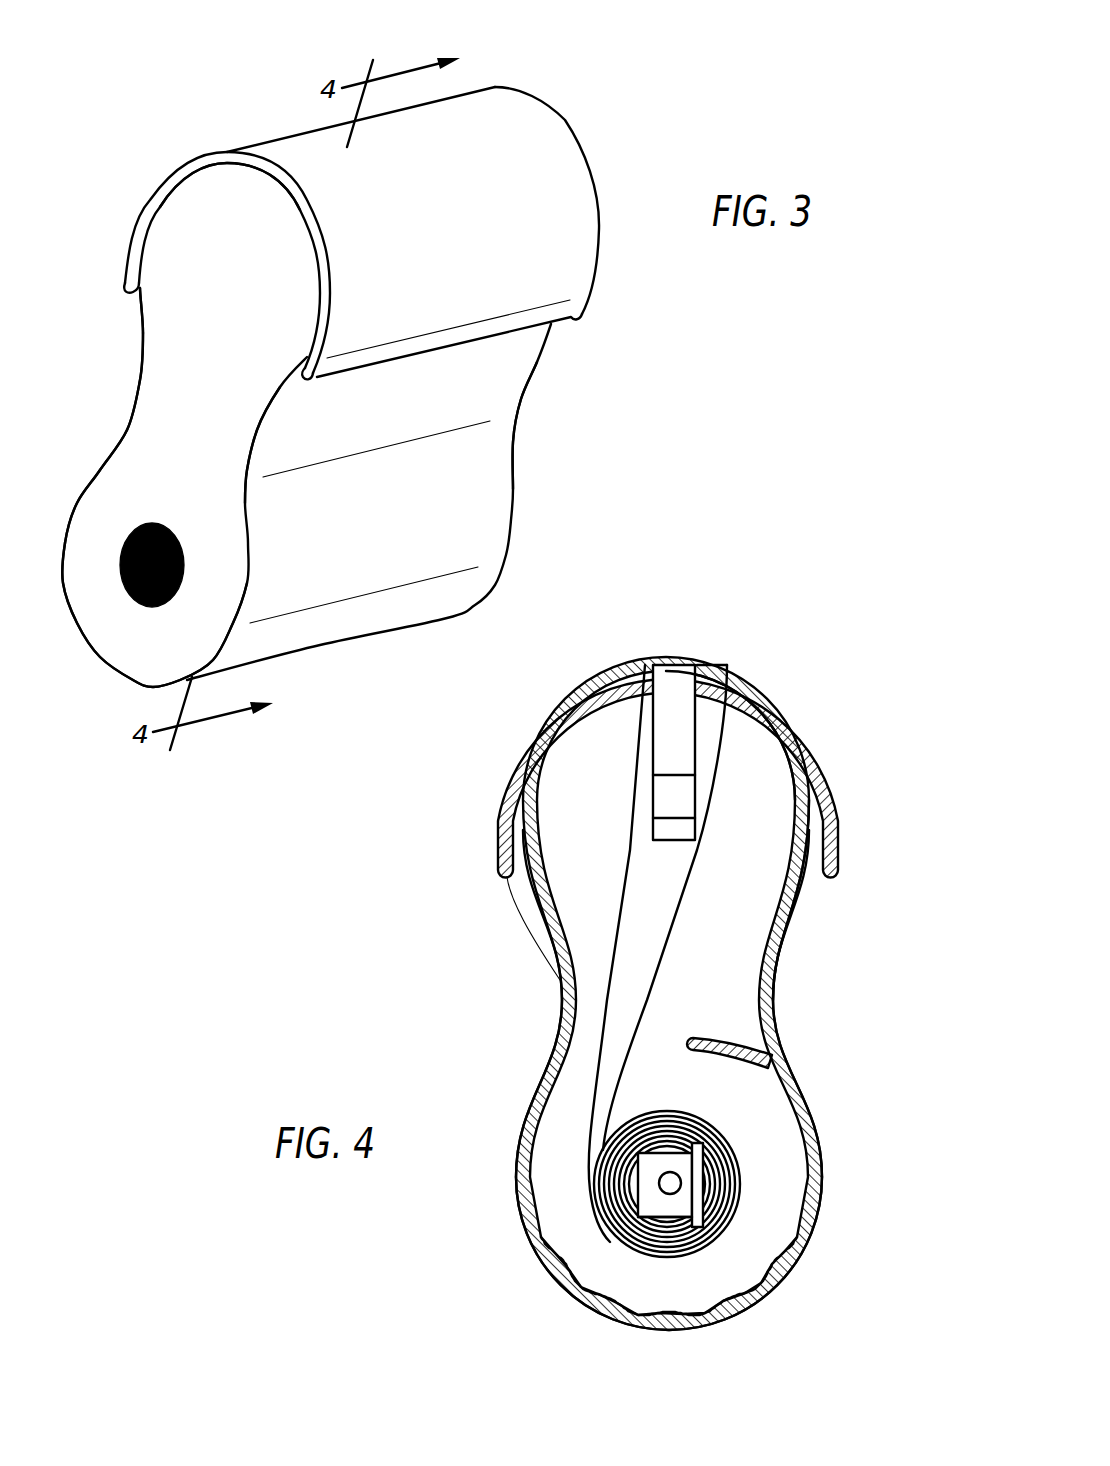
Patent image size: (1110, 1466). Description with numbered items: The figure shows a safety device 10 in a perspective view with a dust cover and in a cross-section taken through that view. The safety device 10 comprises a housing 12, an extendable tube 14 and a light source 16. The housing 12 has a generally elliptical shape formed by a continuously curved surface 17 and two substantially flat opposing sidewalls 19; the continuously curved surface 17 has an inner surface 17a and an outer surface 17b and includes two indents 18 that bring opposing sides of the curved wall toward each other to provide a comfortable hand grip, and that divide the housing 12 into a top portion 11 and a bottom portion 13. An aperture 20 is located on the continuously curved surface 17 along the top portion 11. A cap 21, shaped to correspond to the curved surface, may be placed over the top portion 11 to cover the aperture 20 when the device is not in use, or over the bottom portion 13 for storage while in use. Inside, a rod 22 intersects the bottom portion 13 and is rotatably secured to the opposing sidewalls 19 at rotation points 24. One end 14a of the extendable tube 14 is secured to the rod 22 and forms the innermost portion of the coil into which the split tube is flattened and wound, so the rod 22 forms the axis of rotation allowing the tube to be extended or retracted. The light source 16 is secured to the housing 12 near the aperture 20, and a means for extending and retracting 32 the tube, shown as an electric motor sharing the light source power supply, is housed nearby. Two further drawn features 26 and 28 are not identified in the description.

In FIG. 3, the safety device 10 is at (124, 81).
In FIG. 4, the safety device 10 is at (855, 624).
In FIG. 3, the top portion 11 is at (238, 272).
In FIG. 4, the top portion 11 is at (757, 798).
In FIG. 3, the housing 12 is at (527, 537).
In FIG. 4, the housing 12 is at (523, 902).
In FIG. 3, the bottom portion 13 is at (153, 665).
In FIG. 4, the bottom portion 13 is at (778, 1199).
In FIG. 4, the extendable tube 14 is at (677, 925).
In FIG. 4, the end of extendable tube 14a is at (660, 1220).
In FIG. 4, the light source 16 is at (695, 733).
In FIG. 3, the continuously curved surface 17 is at (83, 483).
In FIG. 4, the continuously curved surface 17 is at (788, 927).
In FIG. 3, the inner surface 17a is at (382, 523).
In FIG. 4, the inner surface 17a is at (542, 1090).
In FIG. 4, the outer surface 17b is at (822, 1140).
In FIG. 3, the indents 18 is at (138, 385).
In FIG. 4, the indents 18 is at (562, 1008).
In FIG. 3, the sidewalls 19 is at (200, 437).
In FIG. 4, the aperture 20 is at (723, 660).
In FIG. 3, the cap 21 is at (530, 132).
In FIG. 4, the cap 21 is at (838, 770).
In FIG. 4, the rod 22 is at (660, 1183).
In FIG. 3, the rotation points 24 is at (122, 585).
In FIG. 4, the tab 26 is at (723, 1042).
In FIG. 4, the ribs 28 is at (773, 1307).
In FIG. 4, the means for extending and retracting 32 is at (670, 1147).